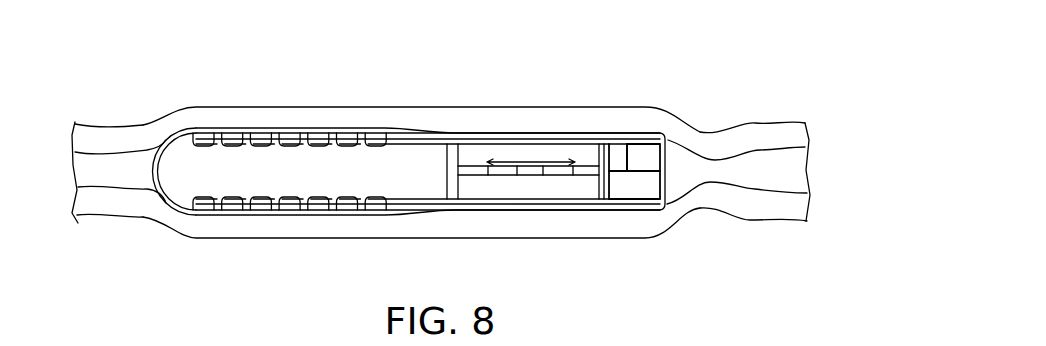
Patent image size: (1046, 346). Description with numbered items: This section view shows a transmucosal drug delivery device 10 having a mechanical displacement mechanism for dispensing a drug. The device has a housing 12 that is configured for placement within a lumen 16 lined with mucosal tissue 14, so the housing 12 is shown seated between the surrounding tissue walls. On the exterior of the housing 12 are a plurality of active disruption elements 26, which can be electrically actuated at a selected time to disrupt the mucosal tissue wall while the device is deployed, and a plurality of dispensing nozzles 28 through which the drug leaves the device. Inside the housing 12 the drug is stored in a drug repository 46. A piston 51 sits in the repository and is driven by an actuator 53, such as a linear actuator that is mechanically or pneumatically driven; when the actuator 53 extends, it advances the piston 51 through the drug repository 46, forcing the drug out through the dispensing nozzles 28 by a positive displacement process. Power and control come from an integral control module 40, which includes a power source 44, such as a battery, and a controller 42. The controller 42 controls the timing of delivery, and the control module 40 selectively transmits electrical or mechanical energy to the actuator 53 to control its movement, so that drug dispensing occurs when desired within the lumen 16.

The transmucosal drug delivery device 10 is at (548, 132).
The housing 12 is at (170, 206).
The mucosal tissue 14 is at (138, 141).
The lumen 16 is at (682, 172).
The active disruption elements 26 is at (261, 130).
The dispensing nozzles 28 is at (303, 130).
The control module 40 is at (618, 148).
The controller 42 is at (643, 148).
The power source 44 is at (633, 195).
The drug repository 46 is at (390, 160).
The piston 51 is at (452, 144).
The actuator 53 is at (528, 177).